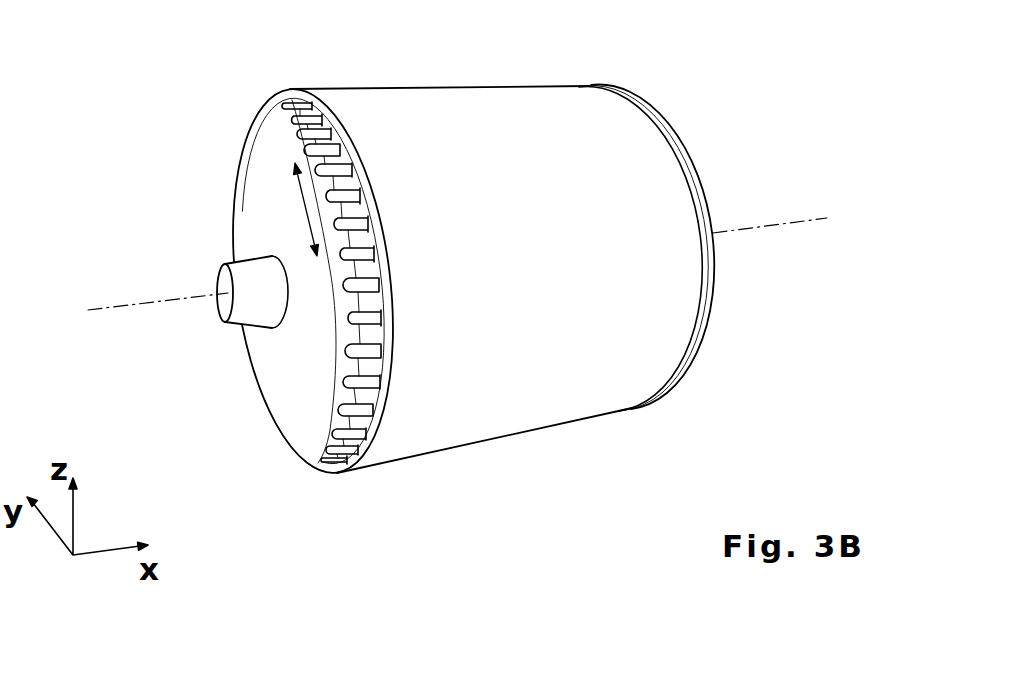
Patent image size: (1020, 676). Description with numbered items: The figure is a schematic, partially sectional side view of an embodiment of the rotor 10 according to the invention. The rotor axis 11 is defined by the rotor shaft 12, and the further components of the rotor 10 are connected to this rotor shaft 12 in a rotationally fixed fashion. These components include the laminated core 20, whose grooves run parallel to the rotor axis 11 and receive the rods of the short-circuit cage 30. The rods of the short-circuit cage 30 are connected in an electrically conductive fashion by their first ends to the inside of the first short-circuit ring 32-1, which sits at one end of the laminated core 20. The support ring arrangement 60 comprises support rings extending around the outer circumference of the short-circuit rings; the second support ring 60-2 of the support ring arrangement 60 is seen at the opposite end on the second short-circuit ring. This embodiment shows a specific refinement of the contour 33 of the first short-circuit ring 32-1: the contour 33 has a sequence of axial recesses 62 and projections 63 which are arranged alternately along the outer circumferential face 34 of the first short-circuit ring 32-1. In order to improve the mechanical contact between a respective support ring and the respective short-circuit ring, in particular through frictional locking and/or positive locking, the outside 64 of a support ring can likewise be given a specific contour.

The rotor 10 is at (212, 66).
The rotor axis 11 is at (827, 218).
The rotor shaft 12 is at (227, 297).
The laminated core 20 is at (407, 108).
The short-circuit cage 30 is at (195, 133).
The first short-circuit ring 32-1 is at (300, 399).
The contour 33 is at (307, 211).
The outer circumferential face 34 is at (268, 188).
The support ring arrangement 60 is at (664, 88).
The second support ring 60-2 is at (663, 138).
The axial recesses 62 is at (351, 194).
The projections 63 is at (372, 338).
The outside 64 is at (692, 160).